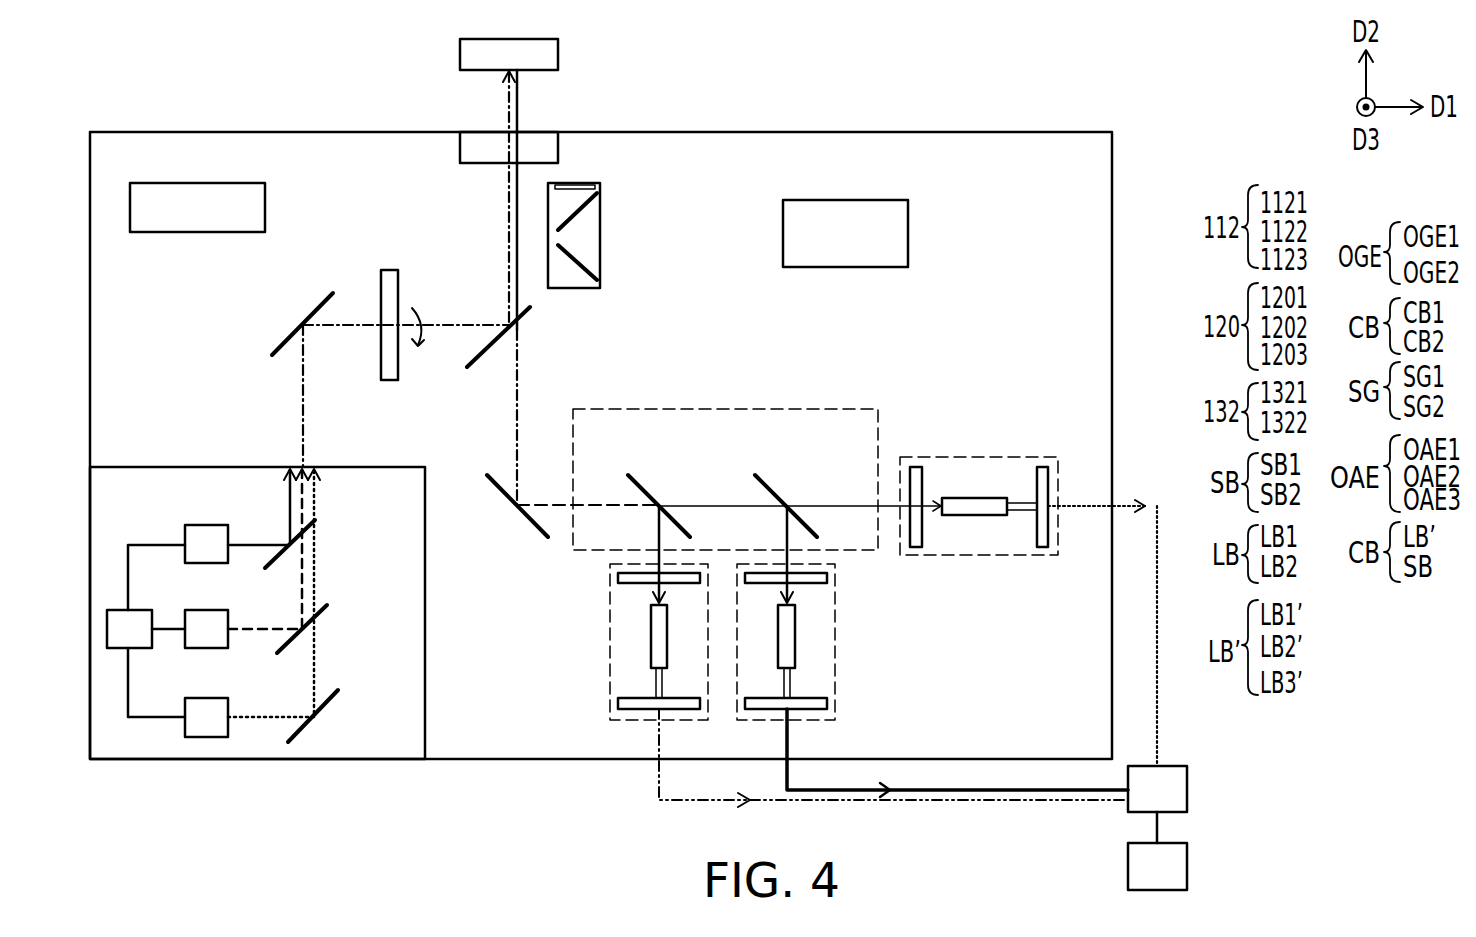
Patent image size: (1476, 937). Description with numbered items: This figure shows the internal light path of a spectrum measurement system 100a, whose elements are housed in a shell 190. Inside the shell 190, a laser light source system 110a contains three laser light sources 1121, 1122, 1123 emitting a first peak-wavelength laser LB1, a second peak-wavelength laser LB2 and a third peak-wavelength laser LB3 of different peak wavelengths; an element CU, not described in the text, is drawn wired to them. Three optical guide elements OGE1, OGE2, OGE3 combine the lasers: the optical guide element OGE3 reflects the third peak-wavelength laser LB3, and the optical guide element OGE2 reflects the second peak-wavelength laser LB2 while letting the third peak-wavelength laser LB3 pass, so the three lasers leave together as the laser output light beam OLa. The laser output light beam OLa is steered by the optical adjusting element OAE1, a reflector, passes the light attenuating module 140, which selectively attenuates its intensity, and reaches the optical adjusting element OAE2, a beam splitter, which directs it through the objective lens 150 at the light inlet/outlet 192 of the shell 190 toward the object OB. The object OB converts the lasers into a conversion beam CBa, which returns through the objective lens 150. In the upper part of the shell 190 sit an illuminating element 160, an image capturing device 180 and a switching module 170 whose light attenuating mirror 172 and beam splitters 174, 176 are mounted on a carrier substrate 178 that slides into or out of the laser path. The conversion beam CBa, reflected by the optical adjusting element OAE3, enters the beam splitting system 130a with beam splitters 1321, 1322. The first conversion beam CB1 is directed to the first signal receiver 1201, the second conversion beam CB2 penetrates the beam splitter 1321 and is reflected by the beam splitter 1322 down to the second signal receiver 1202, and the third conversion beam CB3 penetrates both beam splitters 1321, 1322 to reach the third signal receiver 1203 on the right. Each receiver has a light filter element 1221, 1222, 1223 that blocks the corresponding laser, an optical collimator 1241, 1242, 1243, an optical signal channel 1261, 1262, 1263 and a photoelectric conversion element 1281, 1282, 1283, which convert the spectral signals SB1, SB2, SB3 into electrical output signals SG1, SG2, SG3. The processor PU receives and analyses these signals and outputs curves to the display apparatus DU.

The spectrum measurement system 100a is at (1447, 879).
The shell 190 is at (232, 132).
The illuminating element 160 is at (197, 183).
The objective lens 150 is at (460, 150).
The light inlet/outlet 192 is at (468, 118).
The object OB is at (460, 55).
The conversion beam CBa is at (519, 103).
The switching module 170 is at (619, 249).
The light attenuating mirror 172 is at (575, 186).
The beam splitter 174 is at (585, 212).
The beam splitter 176 is at (582, 290).
The carrier substrate 178 is at (600, 203).
The image capturing device 180 is at (845, 200).
The light attenuating module 140 is at (390, 381).
The optical adjusting element OAE1 is at (322, 305).
The optical adjusting element OAE2 is at (478, 362).
The optical adjusting element OAE3 is at (496, 486).
The laser output light beam OLa is at (300, 412).
The laser light source system 110a is at (293, 641).
The control unit CU is at (138, 608).
The laser light source 1121 is at (198, 525).
The laser light source 1122 is at (205, 648).
The laser light source 1123 is at (185, 722).
The first peak-wavelength laser LB1 is at (290, 510).
The second peak-wavelength laser LB2 is at (302, 598).
The third peak-wavelength laser LB3 is at (312, 685).
The optical guide element OGE1 is at (313, 528).
The optical guide element OGE2 is at (298, 633).
The optical guide element OGE3 is at (335, 705).
The beam splitting system 130a is at (705, 409).
The beam splitter 1321 is at (630, 476).
The beam splitter 1322 is at (760, 478).
The first conversion beam CB1 is at (656, 533).
The second conversion beam CB2 is at (786, 533).
The third conversion beam CB3 is at (816, 504).
The first signal receiver 1201 is at (612, 715).
The light filter element 1221 is at (620, 578).
The optical collimator 1241 is at (655, 641).
The optical signal channel 1261 is at (656, 683).
The photoelectric conversion element 1281 is at (620, 704).
The first spectral signal SB1 is at (652, 598).
The second signal receiver 1202 is at (832, 715).
The light filter element 1222 is at (830, 578).
The optical collimator 1242 is at (795, 641).
The optical signal channel 1262 is at (792, 683).
The photoelectric conversion element 1282 is at (830, 704).
The second spectral signal SB2 is at (795, 598).
The third signal receiver 1203 is at (965, 556).
The light filter element 1223 is at (913, 480).
The optical collimator 1243 is at (980, 505).
The optical signal channel 1263 is at (1025, 505).
The photoelectric conversion element 1283 is at (1043, 478).
The third spectral signal SB3 is at (927, 503).
The electrical output signal SG1 is at (893, 777).
The electrical output signal SG2 is at (957, 753).
The electrical output signal SG3 is at (1110, 617).
The processor PU is at (1157, 804).
The display apparatus DU is at (1157, 866).